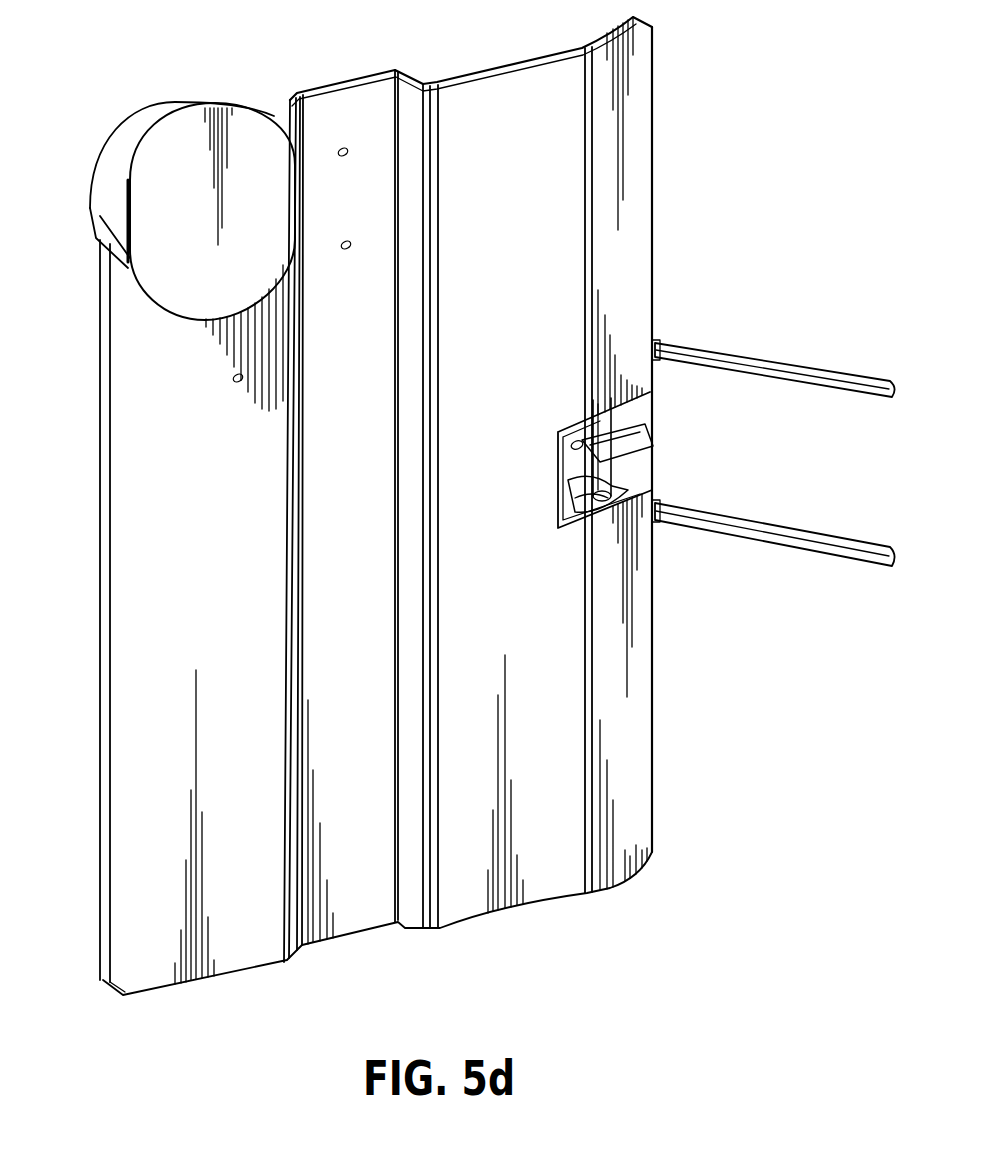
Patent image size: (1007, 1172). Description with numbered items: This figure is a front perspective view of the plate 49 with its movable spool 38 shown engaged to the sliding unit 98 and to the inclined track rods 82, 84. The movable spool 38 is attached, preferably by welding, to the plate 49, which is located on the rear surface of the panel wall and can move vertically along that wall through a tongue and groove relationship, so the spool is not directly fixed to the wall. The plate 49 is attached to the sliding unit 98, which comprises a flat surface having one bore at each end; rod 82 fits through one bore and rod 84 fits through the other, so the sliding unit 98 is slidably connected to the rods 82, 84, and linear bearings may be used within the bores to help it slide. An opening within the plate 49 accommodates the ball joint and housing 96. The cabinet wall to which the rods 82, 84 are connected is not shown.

The movable spool 38 is at (118, 163).
The plate 49 is at (635, 130).
The rod 82 is at (806, 379).
The rod 84 is at (857, 553).
The housing 96 is at (656, 450).
The sliding unit 98 is at (648, 407).